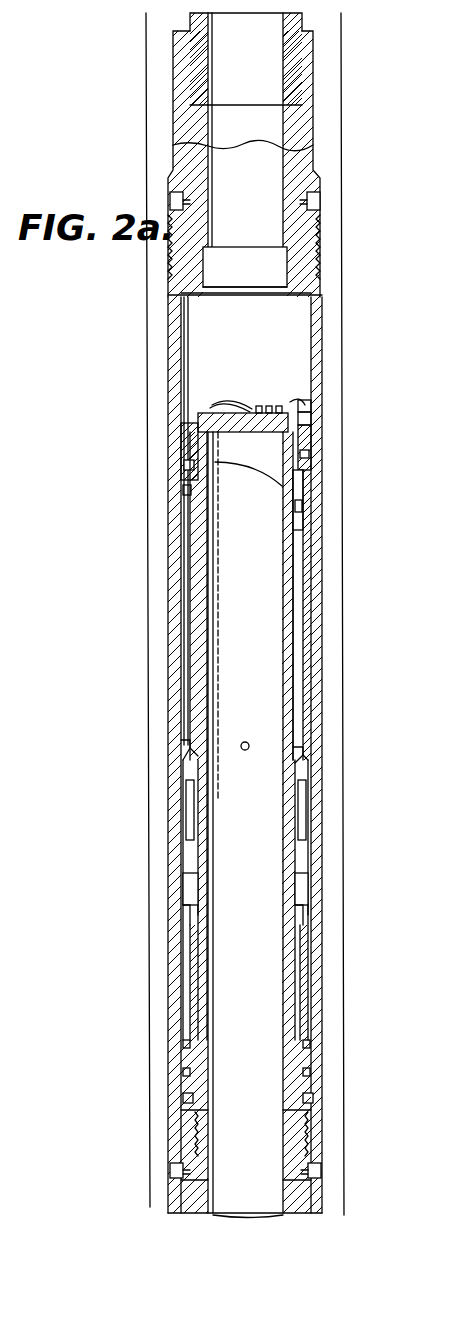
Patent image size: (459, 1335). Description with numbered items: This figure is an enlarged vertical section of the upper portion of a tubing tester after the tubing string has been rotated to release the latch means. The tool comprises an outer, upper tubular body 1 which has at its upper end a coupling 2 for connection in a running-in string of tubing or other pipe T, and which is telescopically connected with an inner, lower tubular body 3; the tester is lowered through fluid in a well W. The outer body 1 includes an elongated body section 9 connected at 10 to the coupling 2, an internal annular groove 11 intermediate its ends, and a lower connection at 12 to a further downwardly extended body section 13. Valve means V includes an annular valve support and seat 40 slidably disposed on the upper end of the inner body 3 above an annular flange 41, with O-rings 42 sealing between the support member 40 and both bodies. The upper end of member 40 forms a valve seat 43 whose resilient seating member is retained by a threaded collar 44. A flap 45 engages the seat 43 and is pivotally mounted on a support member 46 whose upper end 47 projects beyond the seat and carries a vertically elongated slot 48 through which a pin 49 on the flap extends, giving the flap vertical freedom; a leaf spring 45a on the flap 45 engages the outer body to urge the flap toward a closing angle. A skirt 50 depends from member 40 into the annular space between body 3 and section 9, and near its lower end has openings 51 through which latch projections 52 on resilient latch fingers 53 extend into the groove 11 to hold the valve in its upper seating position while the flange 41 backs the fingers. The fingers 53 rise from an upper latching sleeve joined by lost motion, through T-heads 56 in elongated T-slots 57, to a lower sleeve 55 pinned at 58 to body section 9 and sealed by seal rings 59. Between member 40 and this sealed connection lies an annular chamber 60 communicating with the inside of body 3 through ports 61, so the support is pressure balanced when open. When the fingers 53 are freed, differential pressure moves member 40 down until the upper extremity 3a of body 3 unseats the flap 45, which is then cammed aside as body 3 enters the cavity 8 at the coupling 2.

The tubing string T is at (302, 20).
The coupling 2 is at (300, 135).
The threaded connection 10 is at (308, 230).
The cavity 8 is at (282, 265).
The outer tubular body 1 is at (325, 312).
The body section 9 is at (318, 343).
The slot 48 is at (300, 405).
The flap 45 is at (205, 413).
The leaf spring 45a is at (230, 403).
The upper end of support member 47 is at (305, 406).
The pin 49 is at (305, 418).
The support member 46 is at (306, 445).
The valve seat 43 is at (203, 420).
The threaded collar 44 is at (197, 445).
The valve means V is at (178, 461).
The upper extremity of inner body 3a is at (215, 459).
The valve support and seat 40 is at (303, 520).
The O-rings 42 is at (300, 518).
The skirt 50 is at (305, 583).
The well W is at (340, 619).
The annular chamber 60 is at (195, 623).
The ports 61 is at (247, 741).
The latch projections 52 is at (188, 746).
The annular flange 41 is at (195, 763).
The internal annular groove 11 is at (305, 757).
The openings 51 is at (303, 775).
The resilient latch fingers 53 is at (300, 813).
The T-slots 57 is at (300, 880).
The T-heads 56 is at (300, 908).
The lower sleeve 55 is at (302, 973).
The seal rings 59 is at (306, 1072).
The pin 58 is at (315, 1098).
The threaded connection 12 is at (313, 1133).
The body section 13 is at (318, 1190).
The inner tubular body 3 is at (207, 1207).